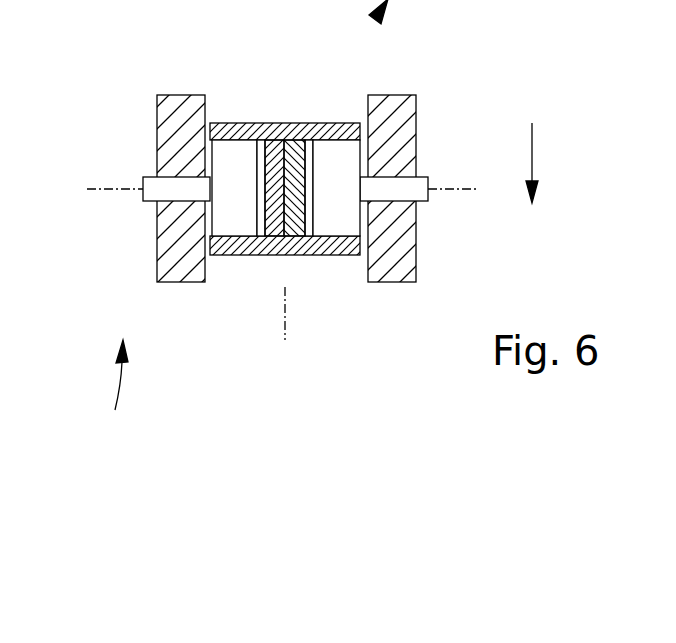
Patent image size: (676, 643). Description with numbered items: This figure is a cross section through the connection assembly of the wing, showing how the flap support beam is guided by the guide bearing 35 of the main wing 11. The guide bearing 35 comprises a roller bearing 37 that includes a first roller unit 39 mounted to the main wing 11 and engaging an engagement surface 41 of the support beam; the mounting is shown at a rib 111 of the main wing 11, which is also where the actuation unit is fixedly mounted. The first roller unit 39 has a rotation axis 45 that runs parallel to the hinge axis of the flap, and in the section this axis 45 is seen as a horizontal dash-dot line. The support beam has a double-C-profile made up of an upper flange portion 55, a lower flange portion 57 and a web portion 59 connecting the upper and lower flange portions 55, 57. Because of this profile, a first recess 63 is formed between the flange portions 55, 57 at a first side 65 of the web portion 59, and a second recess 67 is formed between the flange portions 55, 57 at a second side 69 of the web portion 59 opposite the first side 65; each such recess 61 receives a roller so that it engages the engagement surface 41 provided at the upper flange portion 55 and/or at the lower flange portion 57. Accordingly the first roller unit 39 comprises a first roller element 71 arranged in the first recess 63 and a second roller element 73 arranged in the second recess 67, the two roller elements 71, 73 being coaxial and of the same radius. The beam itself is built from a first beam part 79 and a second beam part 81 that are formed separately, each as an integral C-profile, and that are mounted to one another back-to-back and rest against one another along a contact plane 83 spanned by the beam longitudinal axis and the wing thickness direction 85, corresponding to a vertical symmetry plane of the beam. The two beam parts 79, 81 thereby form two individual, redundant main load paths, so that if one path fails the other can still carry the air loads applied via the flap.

The main wing 11 is at (463, 156).
The guide bearing 35 is at (115, 391).
The roller bearing 37 is at (115, 391).
The first roller unit 39 is at (227, 143).
The engagement surface 41 is at (245, 128).
The rotation axes 45 is at (100, 192).
The upper flange portion 55 is at (298, 128).
The lower flange portion 57 is at (307, 254).
The web portion 59 is at (293, 212).
The recess 61 is at (156, 163).
The first recess 63 is at (262, 181).
The first side 65 is at (136, 60).
The second recess 67 is at (312, 168).
The second side 69 is at (481, 60).
The first roller element 71 is at (230, 158).
The second roller element 73 is at (337, 148).
The first beam part 79 is at (222, 254).
The second beam part 81 is at (352, 254).
The contact plane 83 is at (285, 318).
The wing thickness direction 85 is at (532, 168).
The rib 111 is at (178, 112).